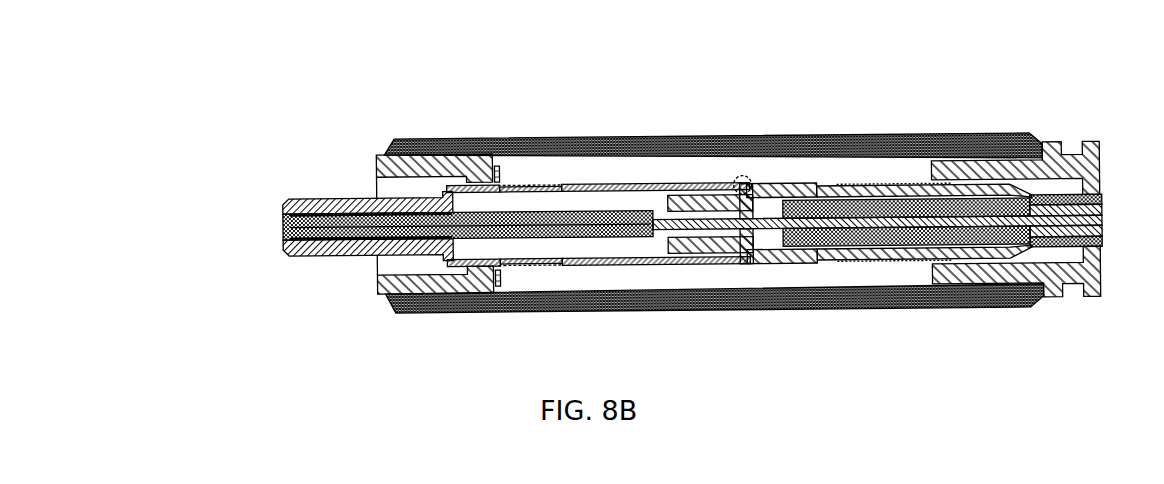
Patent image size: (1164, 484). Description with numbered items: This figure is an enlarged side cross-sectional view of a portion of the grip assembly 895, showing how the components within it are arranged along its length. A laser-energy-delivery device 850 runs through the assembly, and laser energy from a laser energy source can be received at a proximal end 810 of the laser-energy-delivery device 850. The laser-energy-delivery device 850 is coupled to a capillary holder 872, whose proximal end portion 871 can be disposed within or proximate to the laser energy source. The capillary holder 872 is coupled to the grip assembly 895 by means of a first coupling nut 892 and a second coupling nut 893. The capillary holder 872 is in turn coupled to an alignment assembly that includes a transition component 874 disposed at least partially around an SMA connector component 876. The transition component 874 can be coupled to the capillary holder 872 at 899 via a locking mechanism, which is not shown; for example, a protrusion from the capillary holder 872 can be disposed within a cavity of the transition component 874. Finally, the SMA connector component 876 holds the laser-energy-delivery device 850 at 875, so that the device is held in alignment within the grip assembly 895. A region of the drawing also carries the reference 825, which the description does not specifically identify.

The proximal end 810 is at (248, 232).
The proximal end portion 871 is at (308, 178).
The capillary holder 872 is at (356, 189).
The first coupling nut 892 is at (416, 161).
The threaded portion 825 is at (535, 179).
The laser-energy-delivery device 850 is at (603, 179).
The grip assembly 895 is at (695, 96).
The coupling location 899 is at (750, 172).
The transition component 874 is at (796, 180).
The holding location 875 is at (824, 203).
The SMA connector component 876 is at (880, 199).
The second coupling nut 893 is at (976, 156).